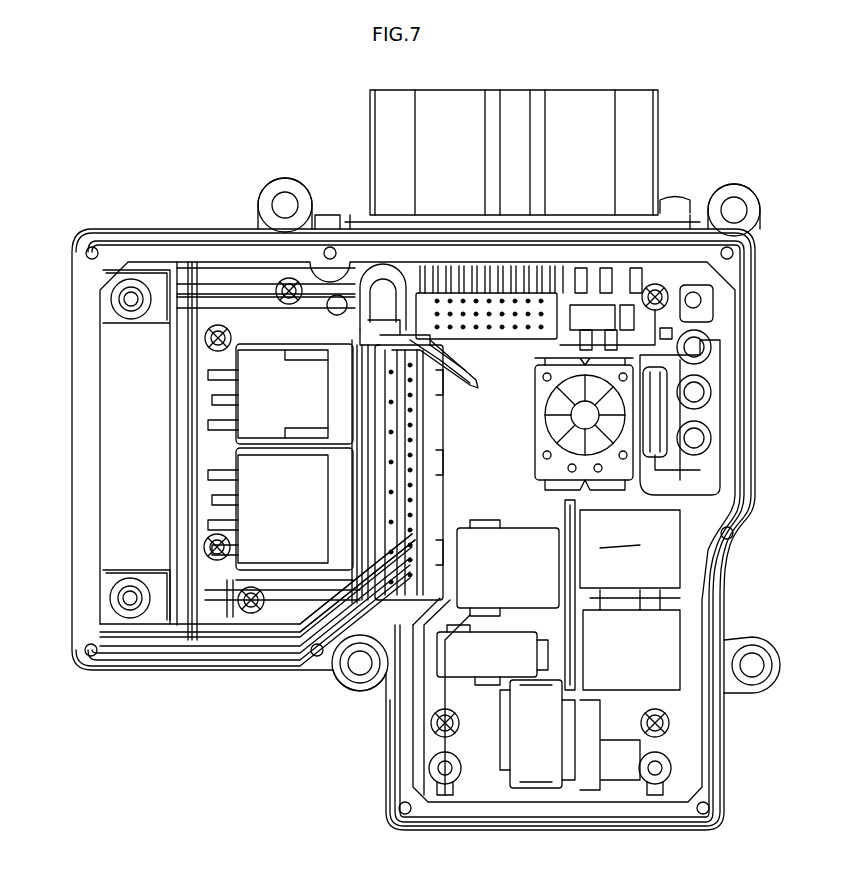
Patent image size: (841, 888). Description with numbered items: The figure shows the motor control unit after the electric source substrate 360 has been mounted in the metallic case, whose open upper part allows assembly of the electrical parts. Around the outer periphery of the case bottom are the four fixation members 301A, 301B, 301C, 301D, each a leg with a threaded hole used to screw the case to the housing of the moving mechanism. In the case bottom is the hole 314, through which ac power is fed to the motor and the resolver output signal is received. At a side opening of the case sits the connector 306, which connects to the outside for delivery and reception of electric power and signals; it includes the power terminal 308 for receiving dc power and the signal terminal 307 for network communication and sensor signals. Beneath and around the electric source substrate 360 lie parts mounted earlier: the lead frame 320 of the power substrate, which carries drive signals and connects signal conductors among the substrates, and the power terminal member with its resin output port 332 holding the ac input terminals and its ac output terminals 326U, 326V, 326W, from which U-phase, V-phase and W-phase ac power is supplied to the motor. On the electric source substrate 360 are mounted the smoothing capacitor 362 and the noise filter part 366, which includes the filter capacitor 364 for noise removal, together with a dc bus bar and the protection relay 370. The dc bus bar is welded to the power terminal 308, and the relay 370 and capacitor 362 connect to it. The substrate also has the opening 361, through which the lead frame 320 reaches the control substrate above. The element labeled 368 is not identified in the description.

The fixation member 301A is at (743, 204).
The fixation member 301B is at (757, 672).
The fixation member 301C is at (262, 207).
The fixation member 301D is at (345, 685).
The connector 306 is at (655, 124).
The signal terminal 307 is at (457, 300).
The power terminal 308 is at (620, 266).
The hole 314 is at (705, 468).
The lead frame 320 is at (255, 527).
The U-phase ac output terminal 326U is at (705, 348).
The V-phase ac output terminal 326V is at (705, 393).
The W-phase ac output terminal 326W is at (705, 438).
The resin output port 332 is at (662, 413).
The electric source substrate 360 is at (428, 622).
The opening 361 is at (325, 672).
The smoothing capacitor 362 is at (638, 660).
The filter capacitor 364 is at (467, 660).
The noise filter part 366 is at (630, 468).
The connector pins 368 is at (513, 347).
The relay 370 is at (258, 472).